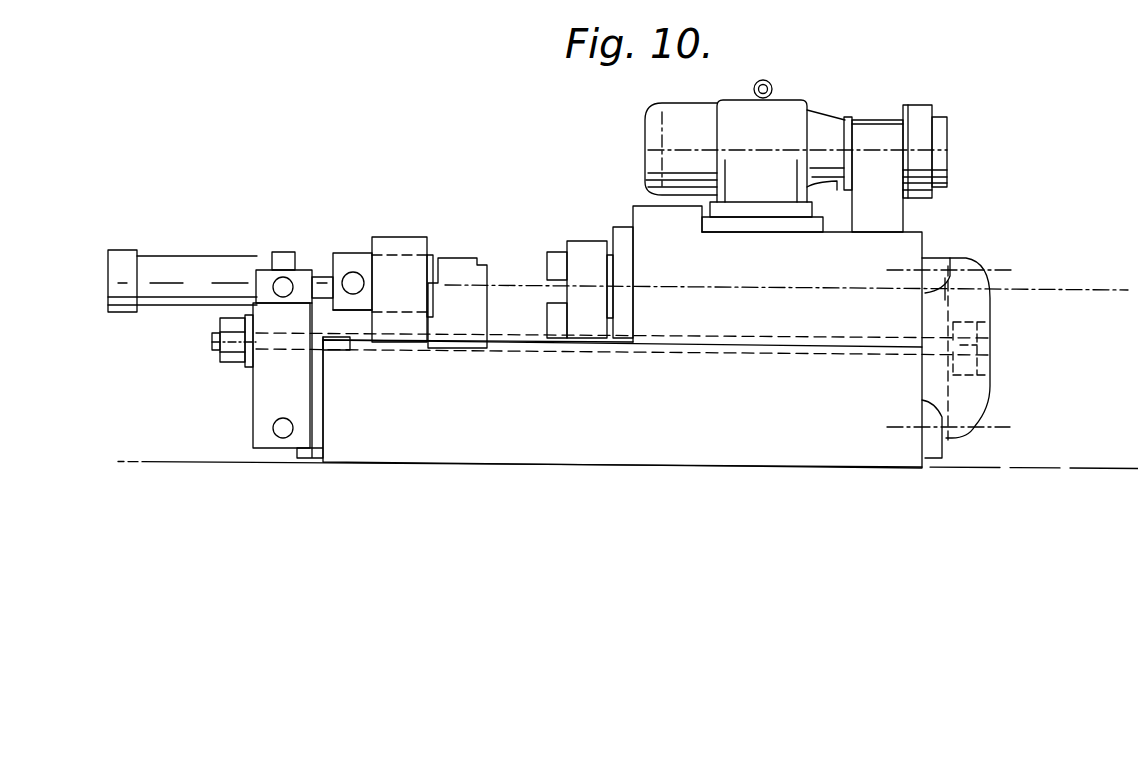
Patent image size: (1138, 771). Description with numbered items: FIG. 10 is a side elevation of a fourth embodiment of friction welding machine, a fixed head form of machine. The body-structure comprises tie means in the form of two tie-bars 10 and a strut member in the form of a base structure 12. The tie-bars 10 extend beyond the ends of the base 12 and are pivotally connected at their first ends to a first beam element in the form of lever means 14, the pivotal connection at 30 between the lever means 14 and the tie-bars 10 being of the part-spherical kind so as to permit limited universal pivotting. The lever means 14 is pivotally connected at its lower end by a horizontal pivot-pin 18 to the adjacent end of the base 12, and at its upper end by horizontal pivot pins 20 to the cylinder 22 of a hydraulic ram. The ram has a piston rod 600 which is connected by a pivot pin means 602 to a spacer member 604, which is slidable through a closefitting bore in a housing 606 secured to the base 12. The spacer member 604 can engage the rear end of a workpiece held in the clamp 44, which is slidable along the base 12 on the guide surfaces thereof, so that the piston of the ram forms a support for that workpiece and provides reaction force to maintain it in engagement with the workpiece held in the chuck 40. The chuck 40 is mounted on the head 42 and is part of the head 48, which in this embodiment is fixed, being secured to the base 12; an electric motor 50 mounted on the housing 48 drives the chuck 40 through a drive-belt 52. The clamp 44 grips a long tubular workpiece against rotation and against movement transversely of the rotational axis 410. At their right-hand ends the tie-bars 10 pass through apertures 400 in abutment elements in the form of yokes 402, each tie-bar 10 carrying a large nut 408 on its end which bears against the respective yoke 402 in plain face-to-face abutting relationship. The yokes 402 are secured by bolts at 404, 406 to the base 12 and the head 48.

The tie-bars 10 is at (523, 340).
The base structure 12 is at (670, 424).
The lever means 14 is at (242, 392).
The pivot-pin 18 is at (272, 429).
The pivot pins 20 is at (276, 281).
The cylinder 22 is at (284, 252).
The pivotal connection 30 is at (229, 365).
The chuck 40 is at (583, 243).
The head 42 is at (637, 194).
The clamp 44 is at (462, 262).
The housing 48 is at (775, 320).
The electric motor 50 is at (778, 144).
The drive-belt 52 is at (892, 202).
The apertures 400 is at (943, 360).
The yokes 402 is at (973, 279).
The bolts 404 is at (958, 265).
The bolts 406 is at (952, 441).
The nut 408 is at (988, 333).
The rotational axis 410 is at (1128, 285).
The piston rod 600 is at (325, 296).
The pivot pin means 602 is at (352, 272).
The spacer member 604 is at (355, 303).
The housing 606 is at (395, 245).